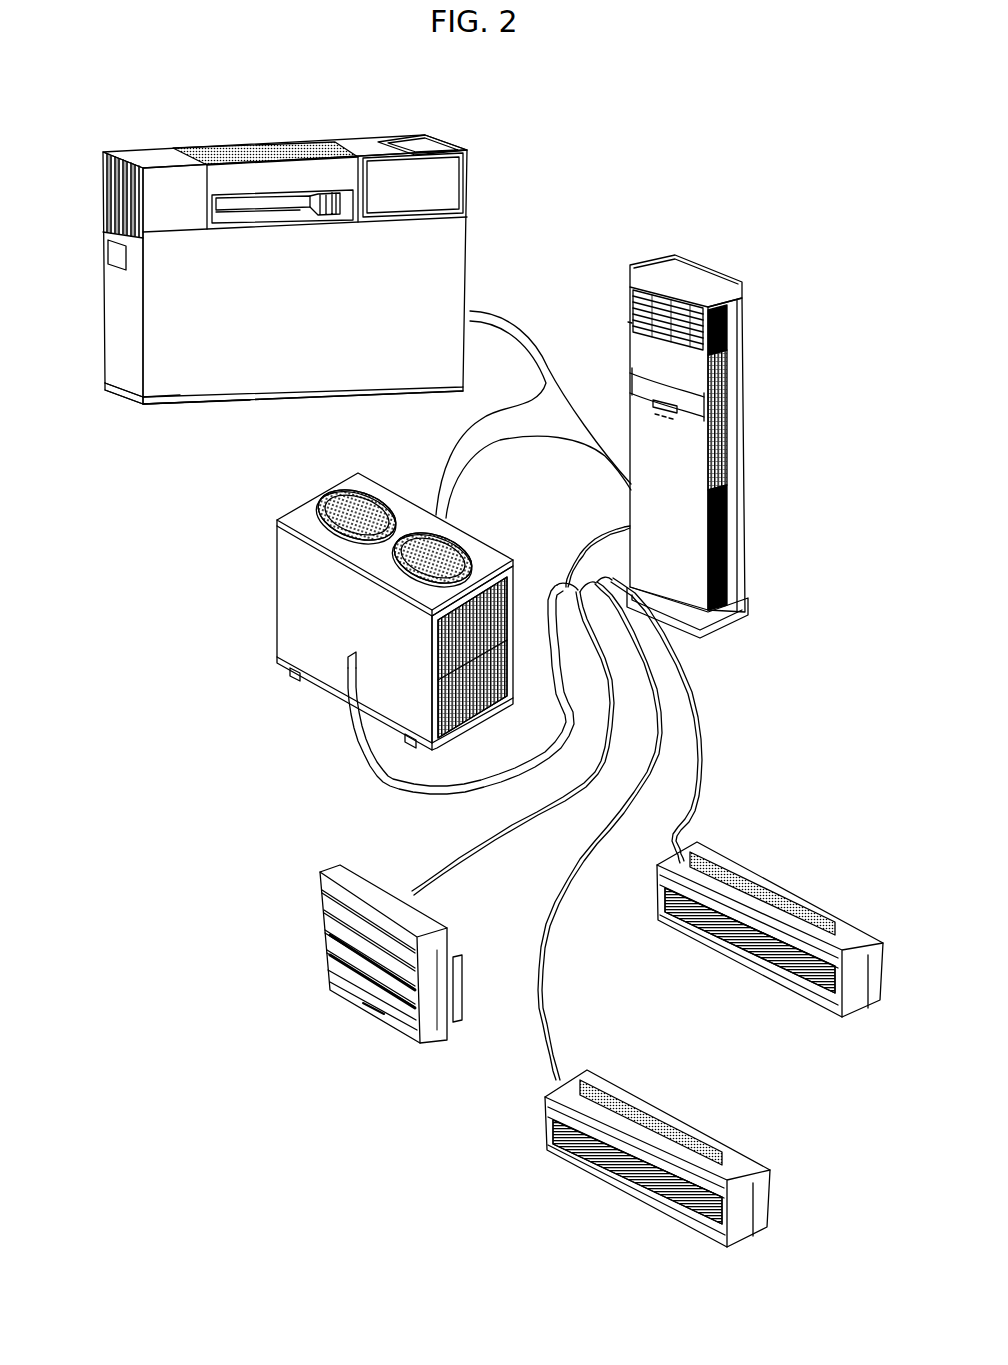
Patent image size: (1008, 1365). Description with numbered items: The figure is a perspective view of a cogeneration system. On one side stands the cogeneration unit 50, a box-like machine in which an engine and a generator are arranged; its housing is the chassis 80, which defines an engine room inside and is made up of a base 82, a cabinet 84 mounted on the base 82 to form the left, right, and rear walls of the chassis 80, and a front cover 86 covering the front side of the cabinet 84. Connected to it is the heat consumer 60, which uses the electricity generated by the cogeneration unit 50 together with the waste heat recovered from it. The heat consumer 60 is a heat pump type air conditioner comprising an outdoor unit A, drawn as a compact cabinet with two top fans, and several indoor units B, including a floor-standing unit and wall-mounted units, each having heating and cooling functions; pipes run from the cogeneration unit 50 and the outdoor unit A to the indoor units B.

The cogeneration unit 50 is at (478, 175).
The heat consumer 60 is at (298, 706).
The chassis 80 is at (187, 477).
The base 82 is at (206, 404).
The cabinet 84 is at (130, 385).
The front cover 86 is at (170, 386).
The outdoor unit A is at (460, 520).
The indoor units B is at (760, 343).